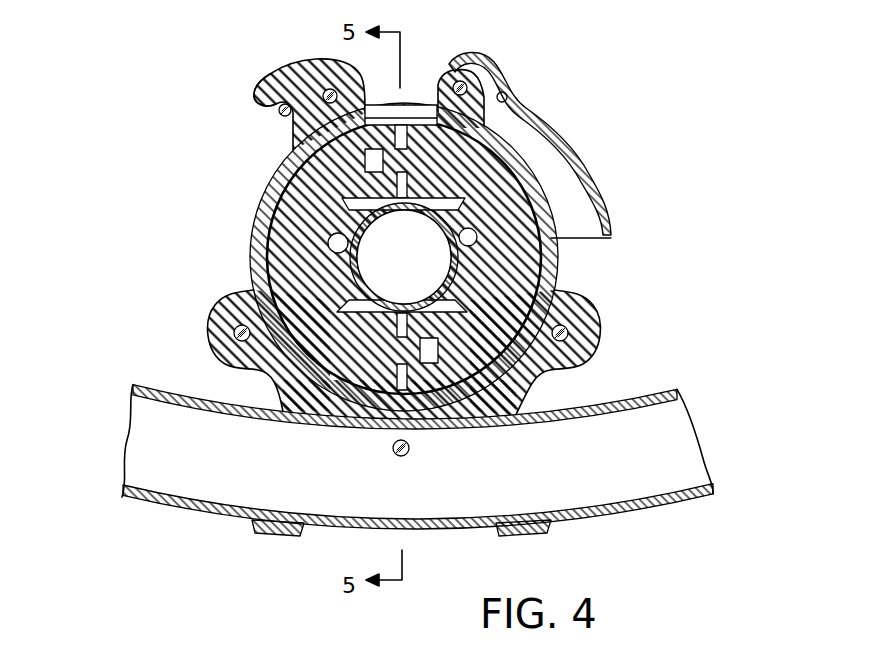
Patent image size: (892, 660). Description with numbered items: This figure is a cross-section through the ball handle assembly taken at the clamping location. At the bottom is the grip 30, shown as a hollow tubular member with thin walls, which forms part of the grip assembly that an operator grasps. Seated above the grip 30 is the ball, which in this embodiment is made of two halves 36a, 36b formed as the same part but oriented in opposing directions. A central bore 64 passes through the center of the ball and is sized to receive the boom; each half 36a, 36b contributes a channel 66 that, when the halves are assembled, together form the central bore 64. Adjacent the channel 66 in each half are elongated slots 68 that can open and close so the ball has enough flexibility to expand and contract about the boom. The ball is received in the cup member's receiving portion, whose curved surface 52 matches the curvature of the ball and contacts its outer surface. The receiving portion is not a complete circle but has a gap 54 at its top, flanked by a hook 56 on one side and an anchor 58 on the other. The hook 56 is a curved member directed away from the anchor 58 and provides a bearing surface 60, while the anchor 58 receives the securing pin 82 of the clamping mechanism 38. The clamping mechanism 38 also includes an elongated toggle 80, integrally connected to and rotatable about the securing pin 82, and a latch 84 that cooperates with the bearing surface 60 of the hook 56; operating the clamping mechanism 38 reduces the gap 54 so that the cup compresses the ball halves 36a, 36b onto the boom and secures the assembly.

The grip 30 is at (663, 505).
The first half of ball 36a is at (296, 252).
The second half of ball 36b is at (512, 270).
The clamping mechanism 38 is at (575, 76).
The curved surface 52 is at (280, 181).
The gap 54 is at (420, 70).
The hook 56 is at (306, 76).
The anchor 58 is at (447, 66).
The bearing surface 60 is at (277, 100).
The central bore 64 is at (430, 272).
The channel 66 is at (343, 265).
The elongated slots 68 is at (357, 206).
The toggle 80 is at (574, 157).
The securing pin 82 is at (468, 86).
The latch 84 is at (281, 114).